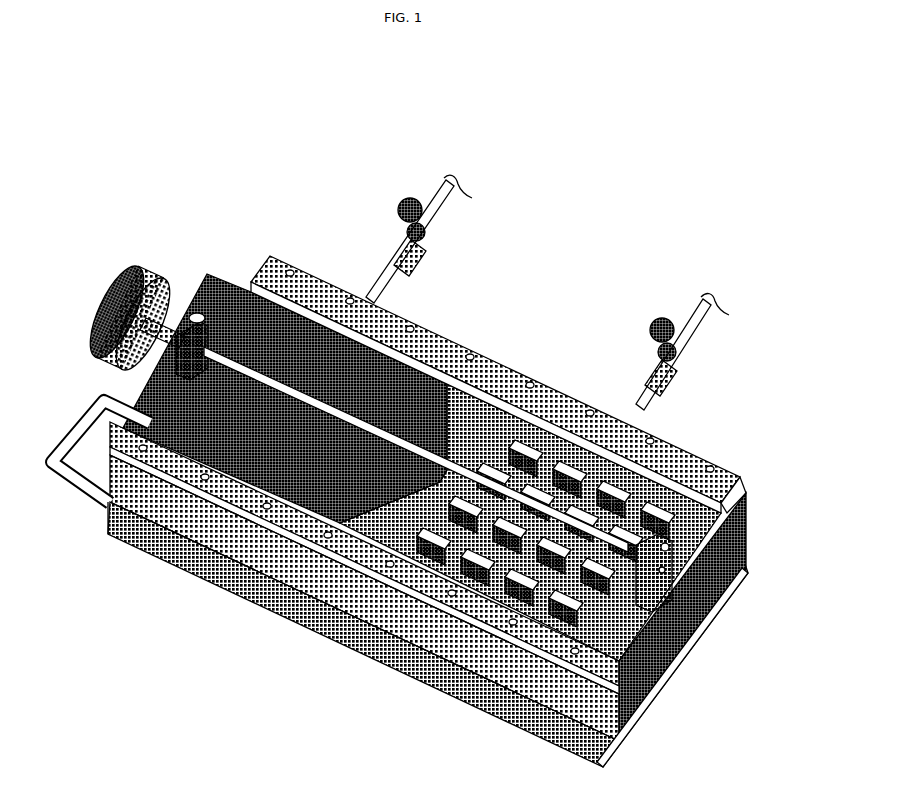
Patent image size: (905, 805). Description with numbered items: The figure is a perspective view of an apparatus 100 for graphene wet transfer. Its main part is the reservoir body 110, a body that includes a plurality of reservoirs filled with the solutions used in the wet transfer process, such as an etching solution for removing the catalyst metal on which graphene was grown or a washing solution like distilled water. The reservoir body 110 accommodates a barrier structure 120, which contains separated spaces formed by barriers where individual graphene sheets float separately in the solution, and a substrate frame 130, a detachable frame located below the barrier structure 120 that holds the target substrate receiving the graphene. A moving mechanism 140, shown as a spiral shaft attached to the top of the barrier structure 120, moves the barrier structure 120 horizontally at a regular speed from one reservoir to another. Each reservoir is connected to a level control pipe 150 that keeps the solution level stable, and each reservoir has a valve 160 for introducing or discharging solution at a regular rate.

The apparatus for graphene wet transfer 100 is at (656, 150).
The reservoir body 110 is at (310, 622).
The barrier structure 120 is at (553, 437).
The substrate frame 130 is at (326, 300).
The moving mechanism 140 is at (130, 262).
The level control pipe 150 is at (688, 662).
The valve 160 is at (414, 198).